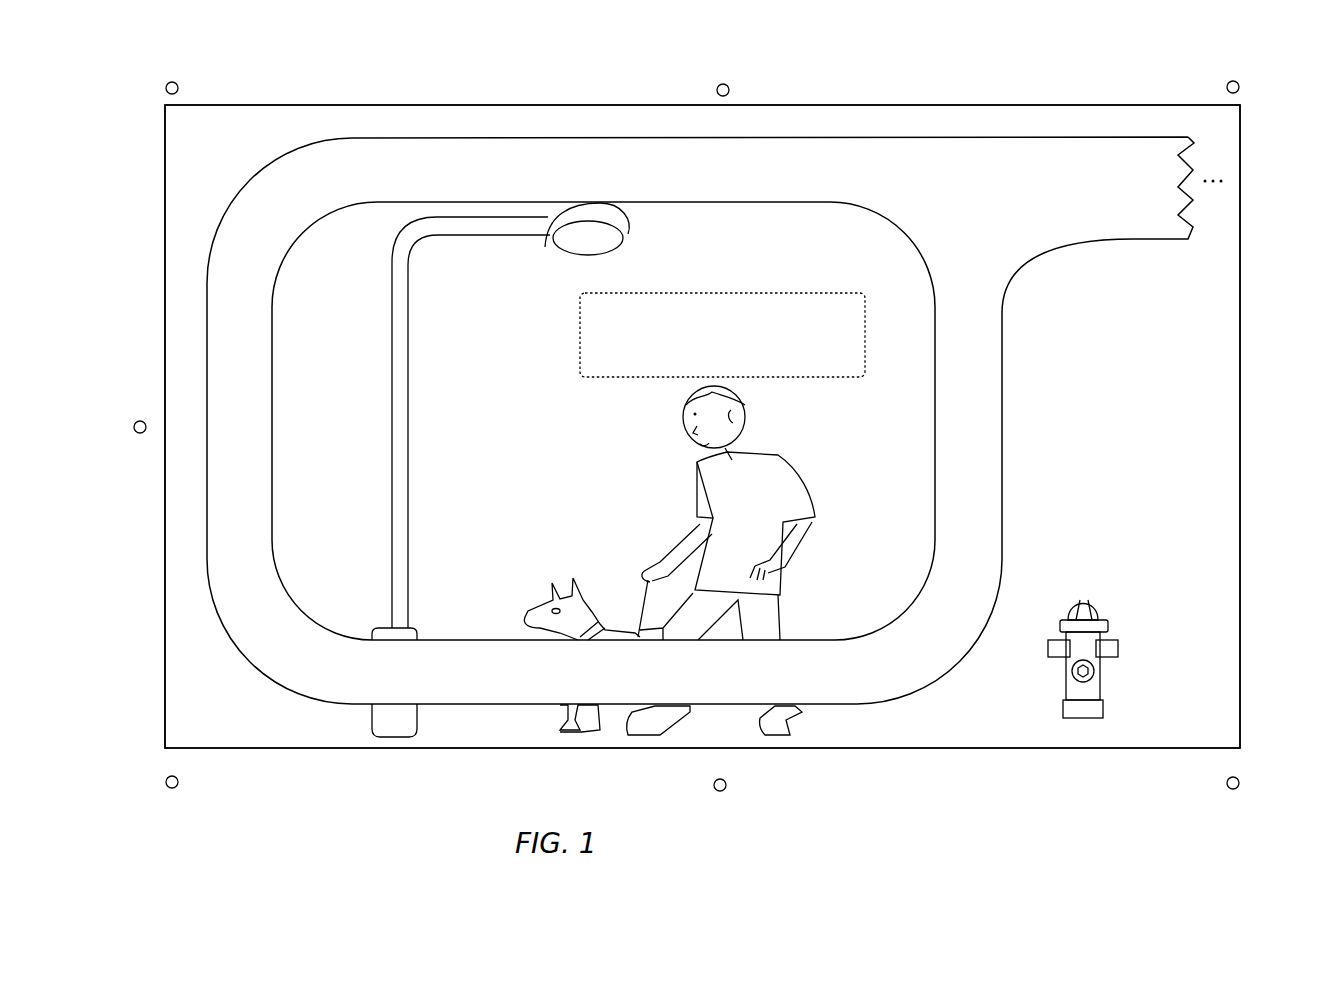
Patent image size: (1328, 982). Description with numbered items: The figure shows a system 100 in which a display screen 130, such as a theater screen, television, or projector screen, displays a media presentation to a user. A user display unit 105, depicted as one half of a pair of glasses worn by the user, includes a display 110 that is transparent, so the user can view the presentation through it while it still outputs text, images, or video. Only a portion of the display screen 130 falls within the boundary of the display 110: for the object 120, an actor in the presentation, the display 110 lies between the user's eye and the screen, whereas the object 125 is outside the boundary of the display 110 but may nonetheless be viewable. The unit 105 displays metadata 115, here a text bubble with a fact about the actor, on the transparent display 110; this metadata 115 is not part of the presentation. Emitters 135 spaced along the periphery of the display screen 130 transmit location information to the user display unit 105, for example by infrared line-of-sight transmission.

The system 100 is at (1007, 70).
The user display unit 105 is at (1003, 452).
The display 110 is at (937, 375).
The metadata 115 is at (722, 293).
The object 120 is at (768, 455).
The object 125 is at (1083, 600).
The display screen 130 is at (1243, 300).
The emitters 135 is at (166, 92).